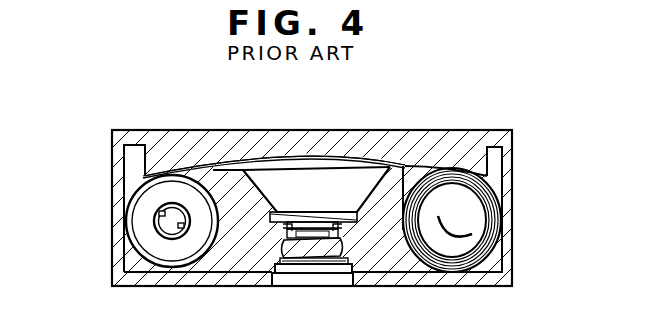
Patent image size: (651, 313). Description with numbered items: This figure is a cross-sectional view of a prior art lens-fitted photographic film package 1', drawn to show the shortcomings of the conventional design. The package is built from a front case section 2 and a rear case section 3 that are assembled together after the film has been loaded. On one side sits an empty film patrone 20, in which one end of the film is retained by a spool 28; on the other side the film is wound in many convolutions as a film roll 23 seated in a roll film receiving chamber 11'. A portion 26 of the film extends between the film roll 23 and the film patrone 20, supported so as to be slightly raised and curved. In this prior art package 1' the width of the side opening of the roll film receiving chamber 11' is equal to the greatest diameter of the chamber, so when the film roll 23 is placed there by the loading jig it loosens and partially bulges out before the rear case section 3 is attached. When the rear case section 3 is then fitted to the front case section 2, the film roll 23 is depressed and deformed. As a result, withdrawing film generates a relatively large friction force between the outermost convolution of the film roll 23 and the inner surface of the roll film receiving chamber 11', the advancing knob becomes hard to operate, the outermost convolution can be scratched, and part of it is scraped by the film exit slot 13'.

The prior art lens-fitted photographic film package 1' is at (312, 163).
The front case section 2 is at (112, 258).
The rear case section 3 is at (193, 138).
The roll film receiving chamber 11' is at (484, 209).
The film exit slot 13' is at (288, 136).
The film patrone 20 is at (142, 225).
The film roll 23 is at (494, 227).
The portion of the film 26 is at (308, 162).
The spool 28 is at (156, 212).